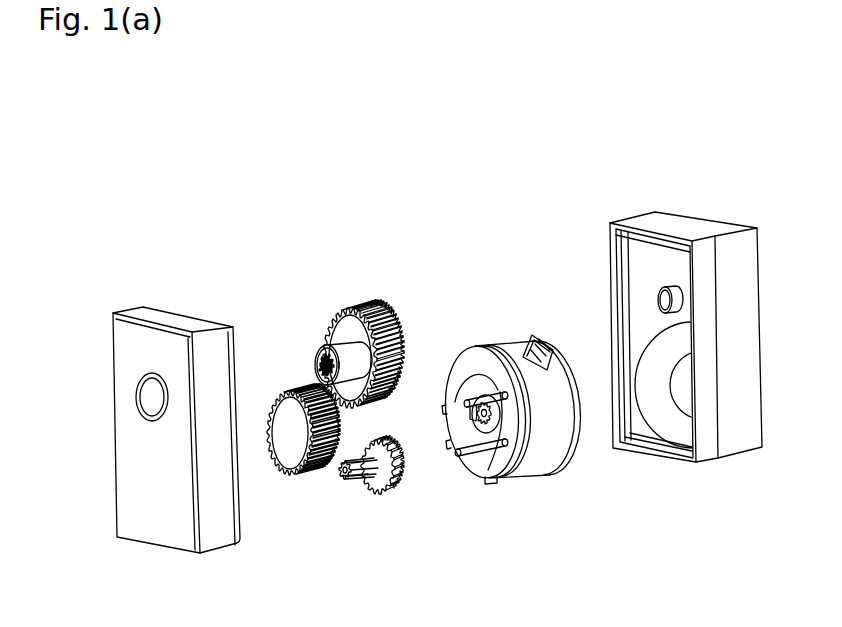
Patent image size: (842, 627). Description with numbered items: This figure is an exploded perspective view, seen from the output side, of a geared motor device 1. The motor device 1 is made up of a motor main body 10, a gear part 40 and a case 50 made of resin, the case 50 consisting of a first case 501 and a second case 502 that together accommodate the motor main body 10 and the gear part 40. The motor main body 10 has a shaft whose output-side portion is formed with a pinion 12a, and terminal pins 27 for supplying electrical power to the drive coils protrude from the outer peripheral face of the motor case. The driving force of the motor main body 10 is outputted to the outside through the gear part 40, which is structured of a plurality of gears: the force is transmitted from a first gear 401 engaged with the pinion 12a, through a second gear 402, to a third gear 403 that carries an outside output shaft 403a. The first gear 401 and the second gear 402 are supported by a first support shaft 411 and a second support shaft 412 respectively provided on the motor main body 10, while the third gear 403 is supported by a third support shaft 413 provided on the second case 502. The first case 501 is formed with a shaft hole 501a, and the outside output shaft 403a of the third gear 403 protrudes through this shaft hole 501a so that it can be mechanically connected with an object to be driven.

The motor device 1 is at (140, 132).
The case 50 is at (458, 152).
The first case 501 is at (193, 318).
The shaft hole 501a is at (142, 398).
The second case 502 is at (620, 220).
The third support shaft 413 is at (658, 298).
The gear part 40 is at (463, 549).
The first gear 401 is at (380, 495).
The second gear 402 is at (310, 480).
The third gear 403 is at (388, 394).
The outside output shaft 403a is at (338, 348).
The motor main body 10 is at (489, 335).
The pinion 12a is at (530, 467).
The terminal pins 27 is at (535, 341).
The second support shaft 412 is at (476, 406).
The first support shaft 411 is at (489, 486).